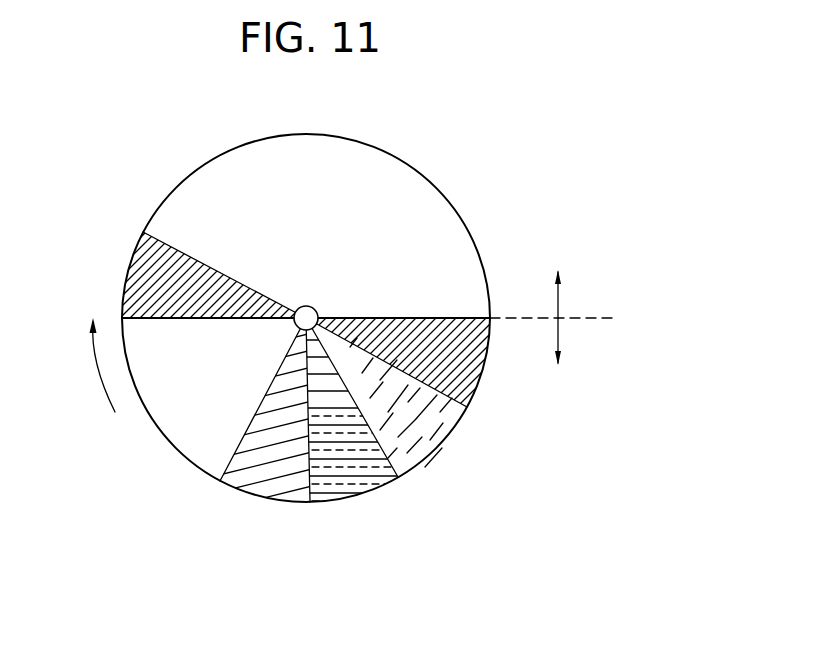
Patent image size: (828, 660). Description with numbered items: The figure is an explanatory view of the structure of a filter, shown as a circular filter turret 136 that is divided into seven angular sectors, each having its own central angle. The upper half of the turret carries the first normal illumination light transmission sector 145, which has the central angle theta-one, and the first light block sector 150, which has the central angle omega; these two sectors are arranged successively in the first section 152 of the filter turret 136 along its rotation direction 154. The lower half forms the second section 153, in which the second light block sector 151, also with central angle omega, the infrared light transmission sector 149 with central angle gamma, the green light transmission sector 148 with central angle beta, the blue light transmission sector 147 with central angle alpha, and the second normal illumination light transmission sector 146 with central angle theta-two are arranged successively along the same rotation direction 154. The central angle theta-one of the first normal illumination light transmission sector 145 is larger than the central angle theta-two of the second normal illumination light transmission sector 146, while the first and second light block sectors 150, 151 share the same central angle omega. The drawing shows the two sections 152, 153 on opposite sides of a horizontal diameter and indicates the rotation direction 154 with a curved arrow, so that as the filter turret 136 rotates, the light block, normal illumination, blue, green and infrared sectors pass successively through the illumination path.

The filter turret 136 is at (508, 250).
The first normal illumination light transmission sector 145 is at (397, 160).
The second normal illumination light transmission sector 146 is at (162, 432).
The blue light transmission sector 147 is at (253, 487).
The green light transmission sector 148 is at (357, 492).
The infrared light transmission sector 149 is at (450, 442).
The first light block sector 150 is at (125, 280).
The second light block sector 151 is at (490, 357).
The first section 152 is at (552, 294).
The second section 153 is at (584, 341).
The rotation direction 154 is at (102, 378).